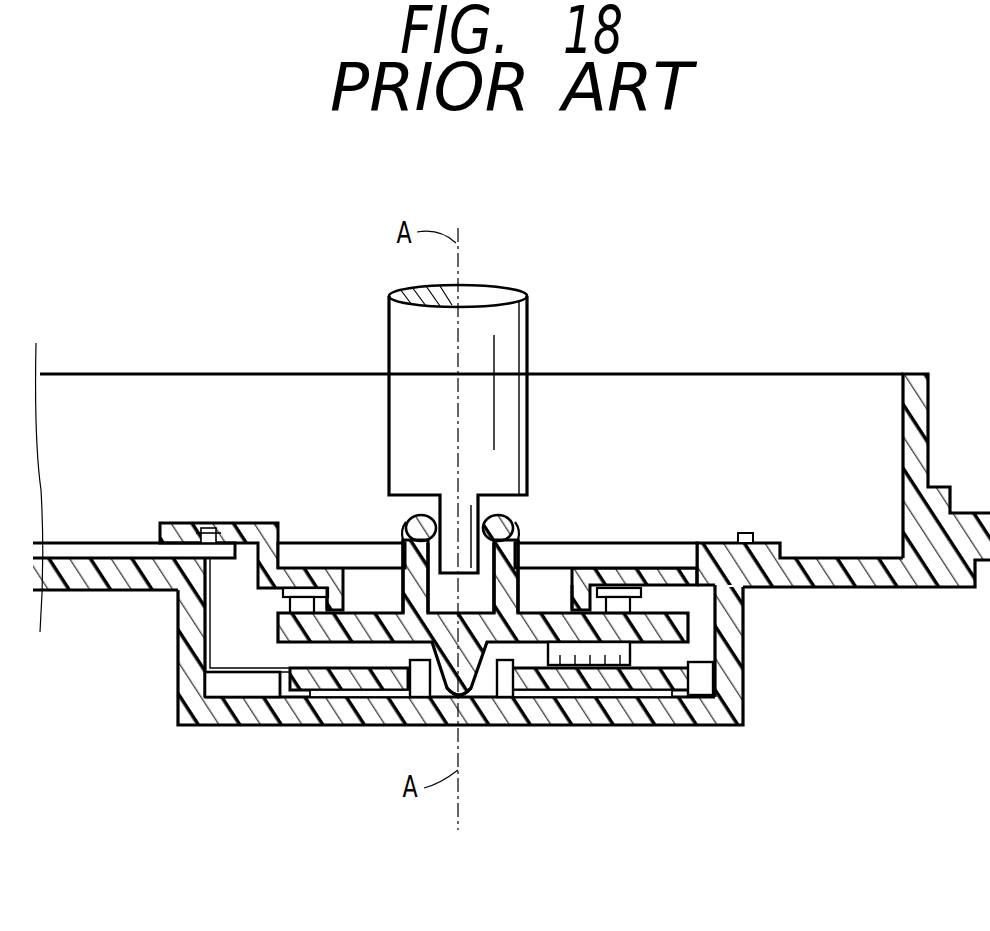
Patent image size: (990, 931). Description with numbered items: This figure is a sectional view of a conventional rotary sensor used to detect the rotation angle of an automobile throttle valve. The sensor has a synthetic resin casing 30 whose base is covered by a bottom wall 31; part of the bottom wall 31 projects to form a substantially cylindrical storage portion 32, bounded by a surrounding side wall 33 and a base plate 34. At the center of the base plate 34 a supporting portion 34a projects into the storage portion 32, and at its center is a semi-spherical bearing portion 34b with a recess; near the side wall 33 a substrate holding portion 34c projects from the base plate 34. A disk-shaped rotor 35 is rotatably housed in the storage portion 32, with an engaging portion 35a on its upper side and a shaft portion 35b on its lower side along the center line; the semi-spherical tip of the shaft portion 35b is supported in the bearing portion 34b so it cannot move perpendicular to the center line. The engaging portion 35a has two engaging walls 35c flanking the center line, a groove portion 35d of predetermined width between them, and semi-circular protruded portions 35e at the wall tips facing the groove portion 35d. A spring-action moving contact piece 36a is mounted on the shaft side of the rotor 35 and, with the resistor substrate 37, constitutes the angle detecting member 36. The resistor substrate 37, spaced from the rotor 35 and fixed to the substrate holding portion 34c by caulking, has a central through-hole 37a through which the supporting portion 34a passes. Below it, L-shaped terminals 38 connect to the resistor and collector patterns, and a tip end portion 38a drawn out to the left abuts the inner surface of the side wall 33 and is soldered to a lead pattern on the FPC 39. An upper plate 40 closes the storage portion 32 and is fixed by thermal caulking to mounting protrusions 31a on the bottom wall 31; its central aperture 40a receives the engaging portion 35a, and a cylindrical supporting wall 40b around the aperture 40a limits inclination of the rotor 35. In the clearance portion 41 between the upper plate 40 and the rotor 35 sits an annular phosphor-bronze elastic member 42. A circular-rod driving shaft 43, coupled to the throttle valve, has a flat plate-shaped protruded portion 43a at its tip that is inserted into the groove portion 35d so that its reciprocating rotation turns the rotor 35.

The casing 30 is at (912, 372).
The bottom wall 31 is at (857, 553).
The mounting protrusions 31a is at (750, 535).
The storage portion 32 is at (243, 650).
The side wall 33 is at (192, 635).
The base plate 34 is at (575, 727).
The supporting portion 34a is at (520, 725).
The bearing portion 34b is at (497, 727).
The substrate holding portion 34c is at (257, 727).
The rotor 35 is at (695, 627).
The engaging portion 35a is at (525, 545).
The shaft portion 35b is at (468, 700).
The engaging walls 35c is at (398, 590).
The groove portion 35d is at (405, 522).
The protruded portions 35e is at (418, 512).
The angle detecting member 36 is at (640, 660).
The moving contact piece 36a is at (630, 645).
The resistor substrate 37 is at (330, 727).
The through-hole 37a is at (380, 727).
The terminals 38 is at (217, 727).
The tip end portion 38a is at (205, 525).
The FPC 39 is at (72, 550).
The upper plate 40 is at (680, 562).
The aperture 40a is at (383, 597).
The supporting wall 40b is at (333, 595).
The clearance portion 41 is at (293, 603).
The elastic member 42 is at (233, 543).
The driving shaft 43 is at (492, 315).
The protruded portion 43a is at (483, 475).